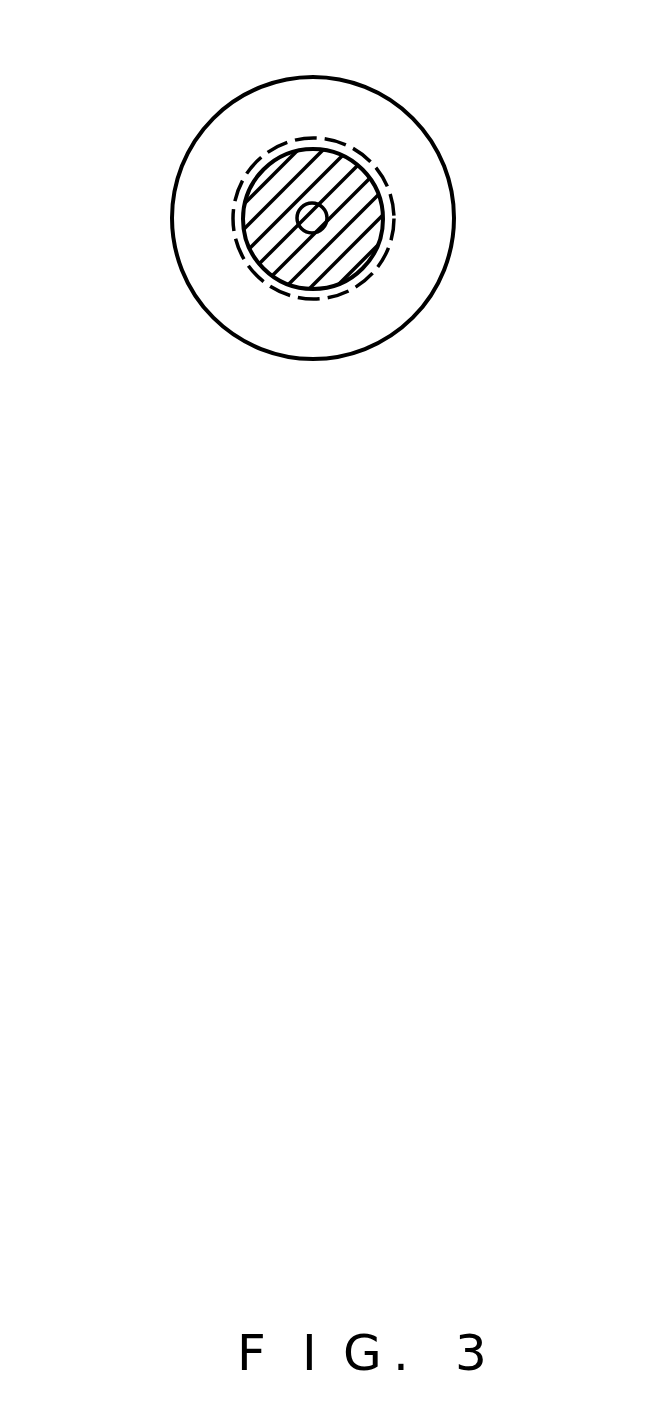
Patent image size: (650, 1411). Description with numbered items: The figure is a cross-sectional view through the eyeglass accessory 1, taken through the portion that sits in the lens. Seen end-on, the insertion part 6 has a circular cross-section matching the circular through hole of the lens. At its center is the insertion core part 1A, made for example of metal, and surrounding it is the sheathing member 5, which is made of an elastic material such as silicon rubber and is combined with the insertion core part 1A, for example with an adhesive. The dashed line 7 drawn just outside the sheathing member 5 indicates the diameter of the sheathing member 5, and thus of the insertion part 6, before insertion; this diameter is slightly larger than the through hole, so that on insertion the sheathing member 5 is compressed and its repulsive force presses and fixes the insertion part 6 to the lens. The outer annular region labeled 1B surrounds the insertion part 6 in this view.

The accessory 1 is at (420, 124).
The insertion core part 1A is at (292, 229).
The outer sheath / coating 1B is at (428, 193).
The sheathing member 5 is at (358, 243).
The insertion part 6 is at (287, 147).
The dashed line 7 is at (242, 232).